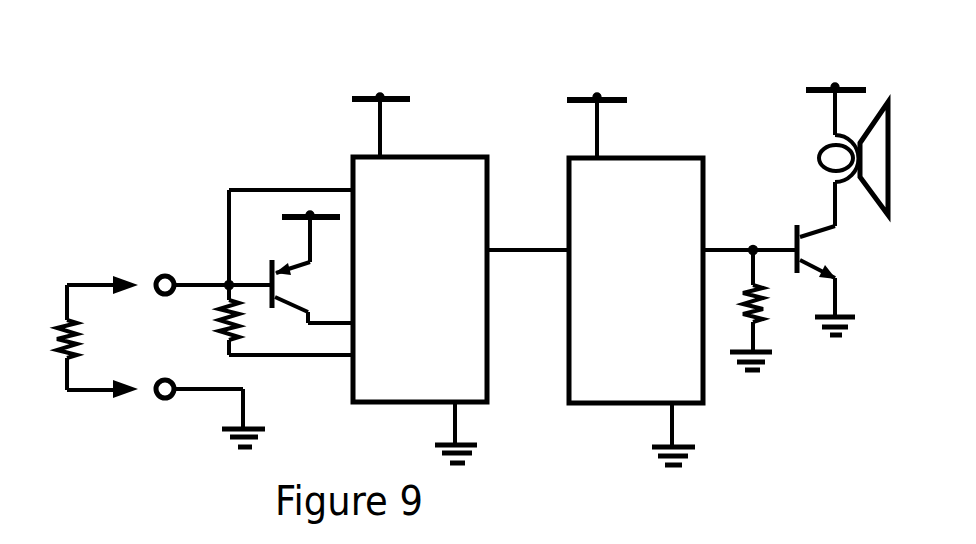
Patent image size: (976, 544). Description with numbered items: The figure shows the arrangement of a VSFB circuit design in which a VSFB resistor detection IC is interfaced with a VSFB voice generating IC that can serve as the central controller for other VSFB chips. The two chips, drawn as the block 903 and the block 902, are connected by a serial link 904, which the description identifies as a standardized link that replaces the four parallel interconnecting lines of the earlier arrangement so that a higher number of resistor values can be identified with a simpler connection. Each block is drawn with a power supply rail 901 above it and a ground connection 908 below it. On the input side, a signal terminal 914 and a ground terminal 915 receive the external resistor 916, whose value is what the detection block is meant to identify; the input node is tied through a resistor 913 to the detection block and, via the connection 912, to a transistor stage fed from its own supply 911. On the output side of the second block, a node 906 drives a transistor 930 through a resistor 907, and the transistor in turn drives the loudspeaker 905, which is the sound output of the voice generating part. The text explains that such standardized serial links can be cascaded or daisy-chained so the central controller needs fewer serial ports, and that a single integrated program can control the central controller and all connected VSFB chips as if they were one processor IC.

The power supply rail 901 is at (380, 98).
The second amplifier stage block 902 is at (665, 188).
The first amplifier stage block 903 is at (450, 188).
The serial link 904 is at (527, 250).
The loudspeaker 905 is at (890, 132).
The output node 906 is at (768, 247).
The bias resistor 907 is at (763, 313).
The ground connection 908 is at (455, 425).
The input transistor supply 911 is at (333, 217).
The feedback connection 912 is at (229, 238).
The input resistor 913 is at (220, 306).
The signal input terminal 914 is at (200, 283).
The ground input terminal 915 is at (188, 390).
The source resistor 916 is at (52, 345).
The output transistor 930 is at (812, 240).